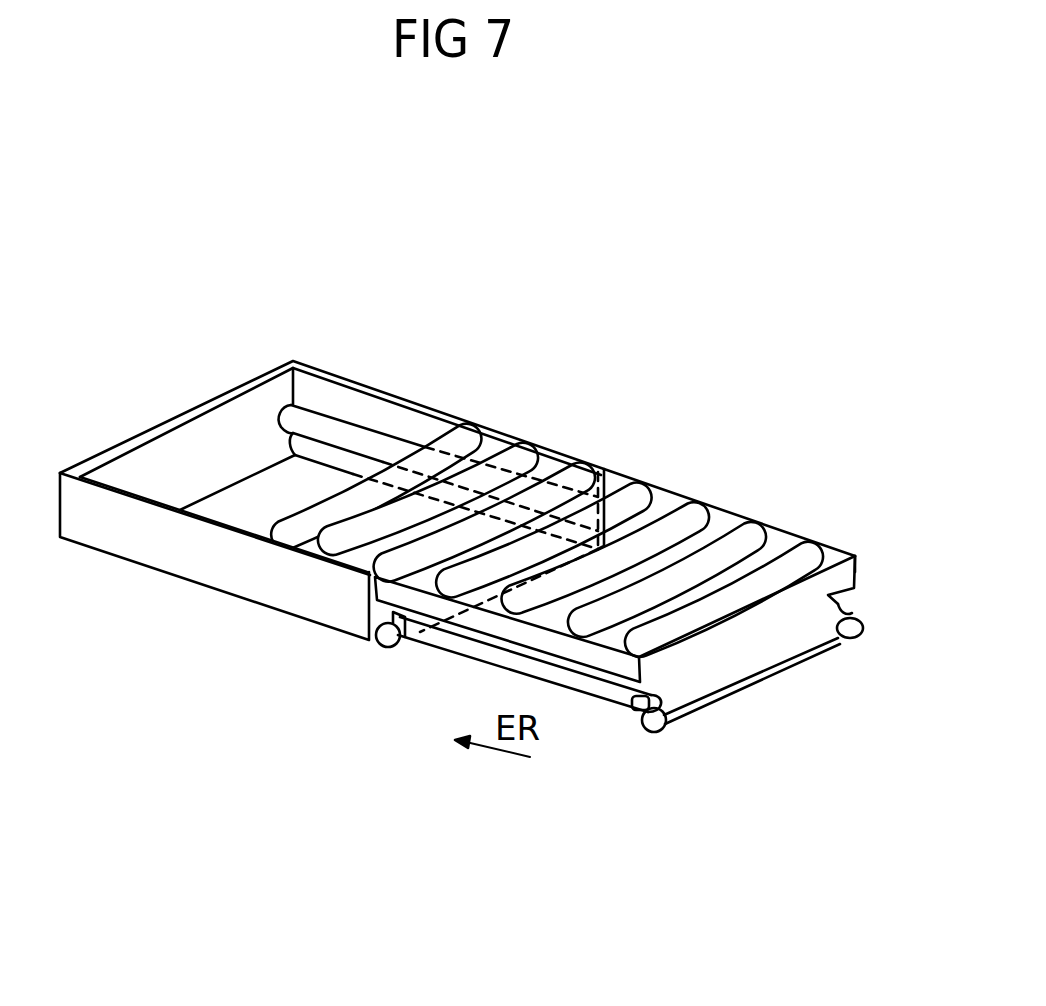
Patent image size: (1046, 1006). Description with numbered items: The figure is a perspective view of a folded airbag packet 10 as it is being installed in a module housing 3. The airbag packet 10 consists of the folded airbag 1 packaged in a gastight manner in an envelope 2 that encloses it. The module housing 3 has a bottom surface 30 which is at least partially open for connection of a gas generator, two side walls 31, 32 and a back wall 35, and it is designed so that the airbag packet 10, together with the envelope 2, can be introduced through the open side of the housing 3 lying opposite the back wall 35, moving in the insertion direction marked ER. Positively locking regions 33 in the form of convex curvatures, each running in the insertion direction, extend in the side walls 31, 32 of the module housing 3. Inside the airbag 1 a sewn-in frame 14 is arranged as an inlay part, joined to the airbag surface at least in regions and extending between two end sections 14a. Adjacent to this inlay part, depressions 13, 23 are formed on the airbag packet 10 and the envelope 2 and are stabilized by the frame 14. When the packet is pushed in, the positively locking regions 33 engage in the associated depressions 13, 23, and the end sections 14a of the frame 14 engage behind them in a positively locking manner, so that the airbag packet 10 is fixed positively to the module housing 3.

The airbag 1 is at (801, 638).
The envelope 2 is at (720, 507).
The module housing 3 is at (178, 331).
The airbag packet 10 is at (782, 511).
The depression 13 is at (857, 558).
The frame 14 is at (762, 680).
The end section 14a is at (856, 637).
The depression 23 is at (848, 612).
The bottom surface 30 is at (240, 500).
The side wall 31 is at (217, 568).
The side wall 32 is at (390, 413).
The positively locking region 33 is at (345, 430).
The back wall 35 is at (253, 403).